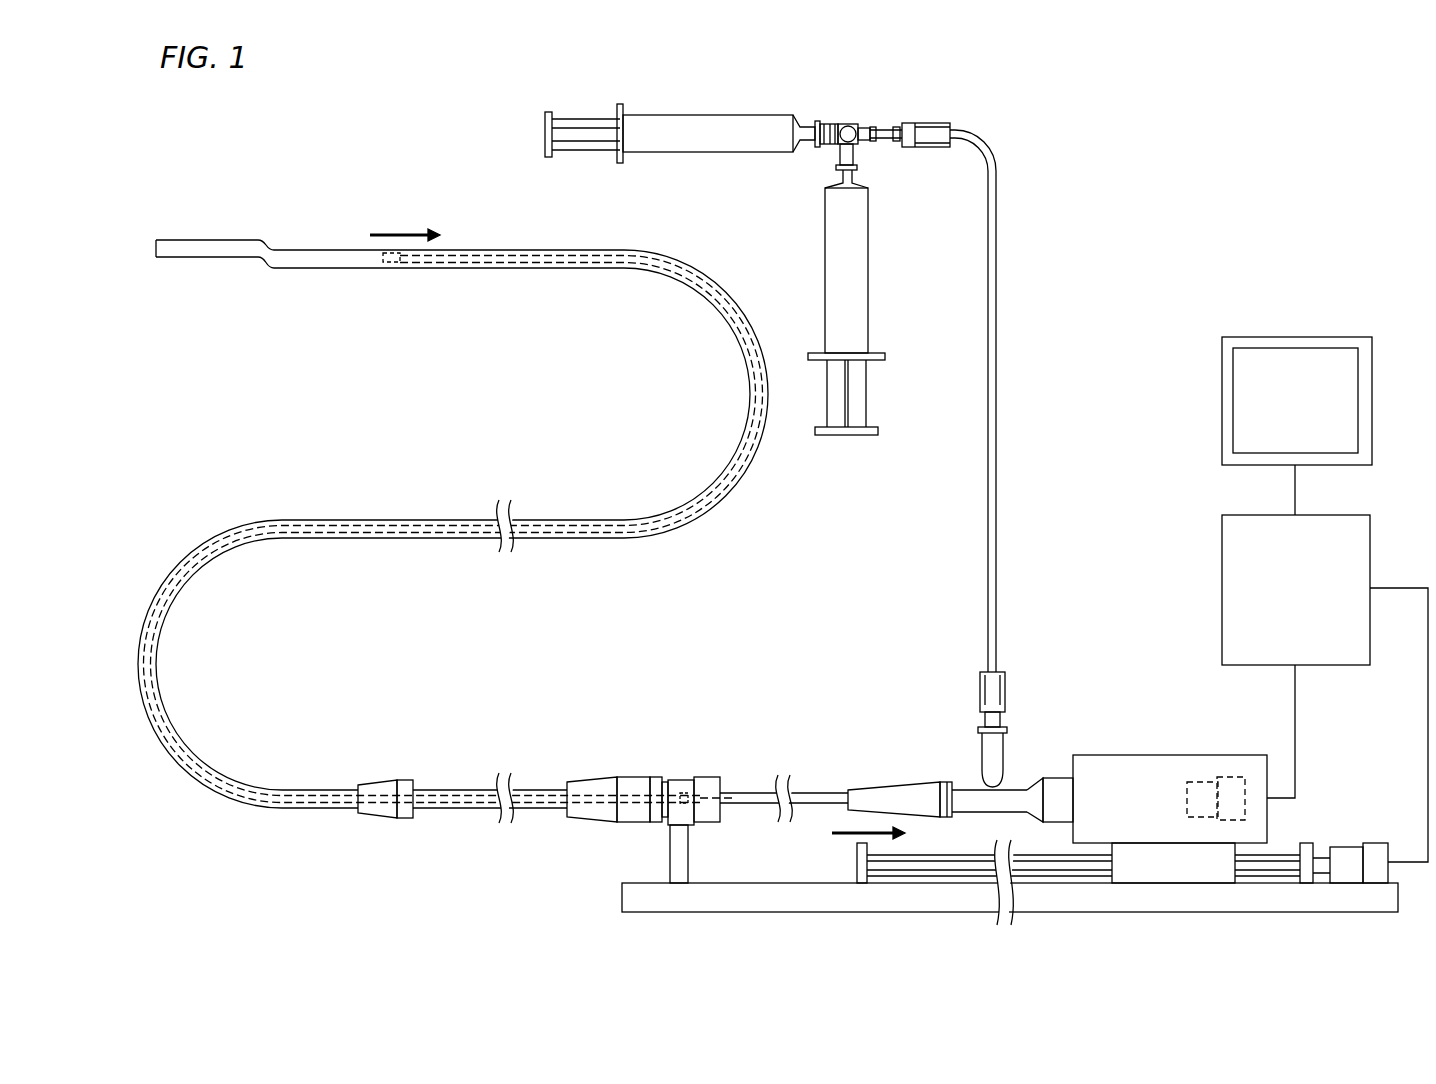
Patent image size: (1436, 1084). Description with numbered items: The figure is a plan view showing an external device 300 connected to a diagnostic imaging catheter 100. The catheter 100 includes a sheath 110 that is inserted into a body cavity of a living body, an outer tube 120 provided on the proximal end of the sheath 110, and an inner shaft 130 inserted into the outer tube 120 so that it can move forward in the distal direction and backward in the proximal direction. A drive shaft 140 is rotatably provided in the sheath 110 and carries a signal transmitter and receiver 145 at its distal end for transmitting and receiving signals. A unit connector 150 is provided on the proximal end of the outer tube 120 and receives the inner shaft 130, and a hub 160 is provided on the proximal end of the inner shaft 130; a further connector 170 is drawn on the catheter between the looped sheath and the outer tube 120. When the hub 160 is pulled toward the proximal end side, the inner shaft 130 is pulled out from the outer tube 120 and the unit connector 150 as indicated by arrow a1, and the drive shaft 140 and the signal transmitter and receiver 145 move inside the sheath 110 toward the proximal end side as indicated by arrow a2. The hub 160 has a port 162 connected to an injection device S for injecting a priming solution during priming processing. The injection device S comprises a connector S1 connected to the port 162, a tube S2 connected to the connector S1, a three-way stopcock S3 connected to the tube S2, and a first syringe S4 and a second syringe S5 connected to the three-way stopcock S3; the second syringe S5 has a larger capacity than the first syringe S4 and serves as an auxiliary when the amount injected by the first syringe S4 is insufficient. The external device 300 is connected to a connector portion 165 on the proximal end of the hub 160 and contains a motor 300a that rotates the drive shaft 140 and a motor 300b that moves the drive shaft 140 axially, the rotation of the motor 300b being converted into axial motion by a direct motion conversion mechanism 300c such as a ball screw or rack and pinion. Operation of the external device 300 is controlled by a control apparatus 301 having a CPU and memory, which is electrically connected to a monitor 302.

The diagnostic imaging catheter 100 is at (740, 266).
The sheath 110 is at (442, 248).
The outer tube 120 is at (447, 810).
The inner shaft 130 is at (742, 805).
The drive shaft 140 is at (565, 250).
The signal transmitter and receiver 145 is at (393, 263).
The unit connector 150 is at (677, 772).
The hub 160 is at (882, 772).
The port 162 is at (987, 752).
The connector portion 165 is at (1048, 772).
The connector 170 is at (375, 818).
The external device 300 is at (1165, 748).
The motor 300a is at (1200, 785).
The motor 300b is at (1352, 865).
The direct motion conversion mechanism 300c is at (1280, 865).
The control apparatus 301 is at (1230, 560).
The monitor 302 is at (1228, 405).
The injection device S is at (1027, 158).
The connector S1 is at (1007, 675).
The tube S2 is at (997, 263).
The three-way stopcock S3 is at (860, 123).
The first syringe S4 is at (700, 153).
The second syringe S5 is at (870, 272).
The arrow a1 is at (852, 834).
The arrow a2 is at (387, 233).